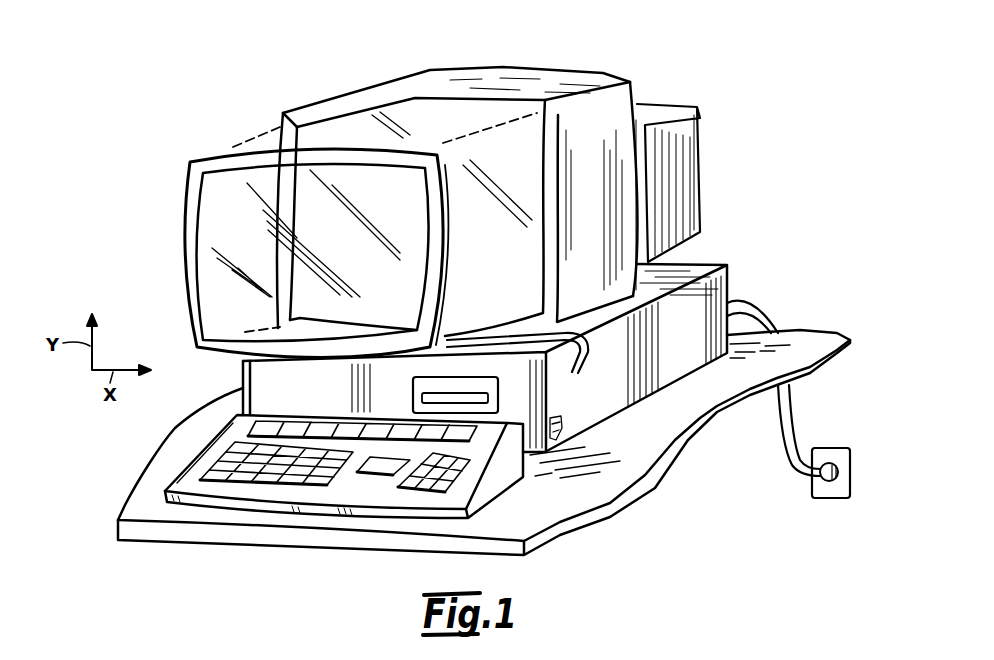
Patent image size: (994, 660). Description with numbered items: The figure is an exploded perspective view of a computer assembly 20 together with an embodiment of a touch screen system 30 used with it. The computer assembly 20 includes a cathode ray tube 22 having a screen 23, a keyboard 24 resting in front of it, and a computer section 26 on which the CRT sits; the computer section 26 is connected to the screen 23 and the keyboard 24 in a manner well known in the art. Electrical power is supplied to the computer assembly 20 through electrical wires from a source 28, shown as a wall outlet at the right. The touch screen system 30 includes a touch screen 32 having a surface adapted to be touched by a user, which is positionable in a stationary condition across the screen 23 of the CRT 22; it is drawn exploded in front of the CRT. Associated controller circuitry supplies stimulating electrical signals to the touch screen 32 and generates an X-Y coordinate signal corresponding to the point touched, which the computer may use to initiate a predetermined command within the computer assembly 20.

The computer assembly 20 is at (676, 88).
The cathode ray tube 22 is at (594, 187).
The screen 23 is at (453, 128).
The keyboard 24 is at (347, 497).
The computer section 26 is at (600, 405).
The source 28 is at (831, 492).
The touch screen system 30 is at (171, 183).
The touch screen 32 is at (187, 258).